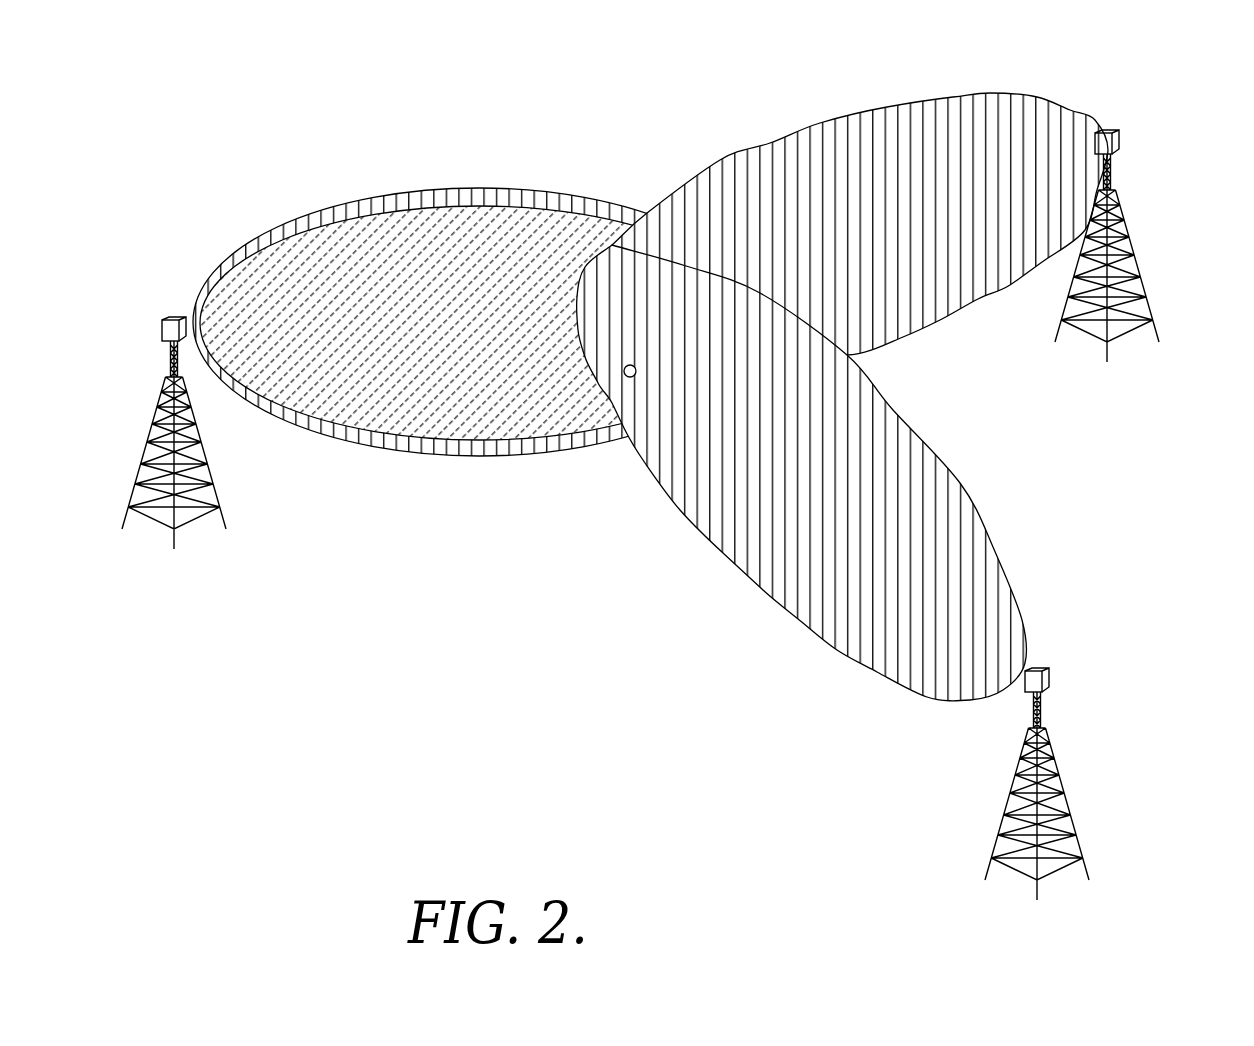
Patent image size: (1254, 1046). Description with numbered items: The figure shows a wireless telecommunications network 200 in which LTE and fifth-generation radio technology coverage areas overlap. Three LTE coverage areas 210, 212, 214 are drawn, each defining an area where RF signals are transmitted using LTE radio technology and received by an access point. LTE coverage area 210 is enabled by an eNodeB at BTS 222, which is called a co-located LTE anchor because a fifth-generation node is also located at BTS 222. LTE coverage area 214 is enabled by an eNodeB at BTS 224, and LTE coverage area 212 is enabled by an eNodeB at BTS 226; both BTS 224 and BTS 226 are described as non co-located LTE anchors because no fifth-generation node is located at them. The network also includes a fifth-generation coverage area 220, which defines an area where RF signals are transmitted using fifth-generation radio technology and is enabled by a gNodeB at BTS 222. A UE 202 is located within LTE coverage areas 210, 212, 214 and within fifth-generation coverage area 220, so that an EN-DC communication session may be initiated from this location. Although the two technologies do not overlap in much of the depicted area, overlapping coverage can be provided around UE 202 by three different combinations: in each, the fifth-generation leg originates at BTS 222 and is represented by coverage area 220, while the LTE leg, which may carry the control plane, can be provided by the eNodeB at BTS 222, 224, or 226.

The wireless telecommunications network 200 is at (362, 88).
The UE 202 is at (634, 377).
The LTE coverage area 210 is at (497, 193).
The LTE coverage area 212 is at (983, 93).
The LTE coverage area 214 is at (953, 485).
The 5G coverage area 220 is at (360, 218).
The BTS 222 is at (178, 312).
The BTS 224 is at (1040, 668).
The BTS 226 is at (1112, 128).